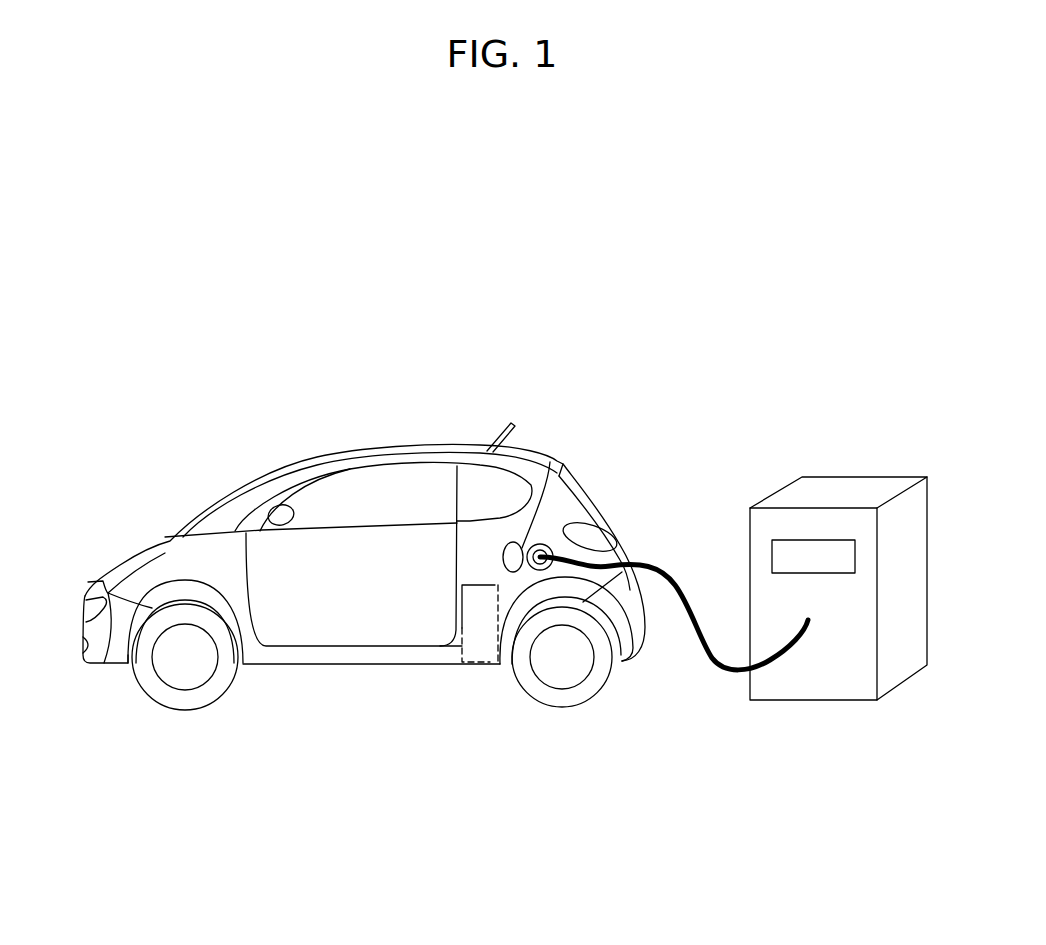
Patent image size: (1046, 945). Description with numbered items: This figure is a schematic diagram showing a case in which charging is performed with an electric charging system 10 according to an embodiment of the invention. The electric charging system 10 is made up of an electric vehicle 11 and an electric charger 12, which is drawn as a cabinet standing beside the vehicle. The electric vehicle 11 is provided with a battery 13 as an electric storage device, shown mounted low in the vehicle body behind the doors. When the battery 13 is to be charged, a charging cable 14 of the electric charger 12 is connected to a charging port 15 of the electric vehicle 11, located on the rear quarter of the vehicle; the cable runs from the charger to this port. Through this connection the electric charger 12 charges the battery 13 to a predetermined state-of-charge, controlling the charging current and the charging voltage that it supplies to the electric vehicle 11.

The electric charging system 10 is at (600, 363).
The electric vehicle 11 is at (363, 448).
The electric charger 12 is at (817, 481).
The battery 13 is at (475, 664).
The charging cable 14 is at (697, 640).
The charging port 15 is at (545, 543).